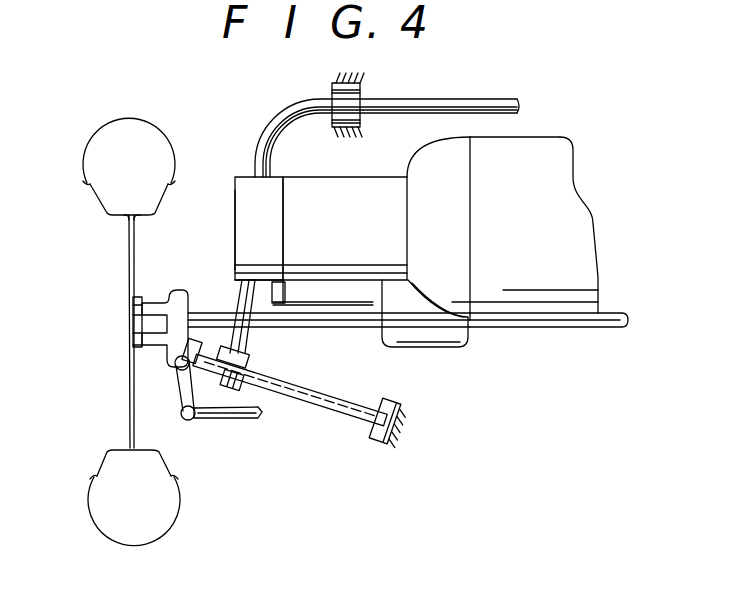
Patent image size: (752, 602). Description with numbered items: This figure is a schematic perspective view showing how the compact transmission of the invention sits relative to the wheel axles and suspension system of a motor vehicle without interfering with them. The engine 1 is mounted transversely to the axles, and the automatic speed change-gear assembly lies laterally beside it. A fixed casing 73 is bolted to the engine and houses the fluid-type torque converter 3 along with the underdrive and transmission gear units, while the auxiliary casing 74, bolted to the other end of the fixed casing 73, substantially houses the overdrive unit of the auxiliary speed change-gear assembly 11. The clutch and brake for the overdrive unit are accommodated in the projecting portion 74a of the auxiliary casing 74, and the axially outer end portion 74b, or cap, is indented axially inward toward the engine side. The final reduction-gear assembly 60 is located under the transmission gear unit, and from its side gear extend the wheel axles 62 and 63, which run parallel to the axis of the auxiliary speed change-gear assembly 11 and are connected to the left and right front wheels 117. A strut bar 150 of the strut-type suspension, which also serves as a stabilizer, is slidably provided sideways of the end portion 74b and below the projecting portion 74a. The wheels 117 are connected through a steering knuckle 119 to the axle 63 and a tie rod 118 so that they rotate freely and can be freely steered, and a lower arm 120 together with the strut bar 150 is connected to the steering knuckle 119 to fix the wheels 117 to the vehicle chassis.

The engine 1 is at (553, 150).
The torque converter 3 is at (450, 211).
The auxiliary speed change-gear assembly 11 is at (389, 186).
The final reduction-gear assembly 60 is at (466, 346).
The wheel axle 62 is at (613, 326).
The wheel axle 63 is at (338, 322).
The fixed casing 73 is at (312, 187).
The auxiliary casing 74 is at (245, 178).
The projecting portion 74a is at (235, 217).
The axially outer end portion 74b is at (272, 295).
The wheels 117 is at (128, 118).
The tie rod 118 is at (229, 419).
The steering knuckle 119 is at (180, 291).
The lower arm 120 is at (330, 405).
The strut bar 150 is at (488, 99).